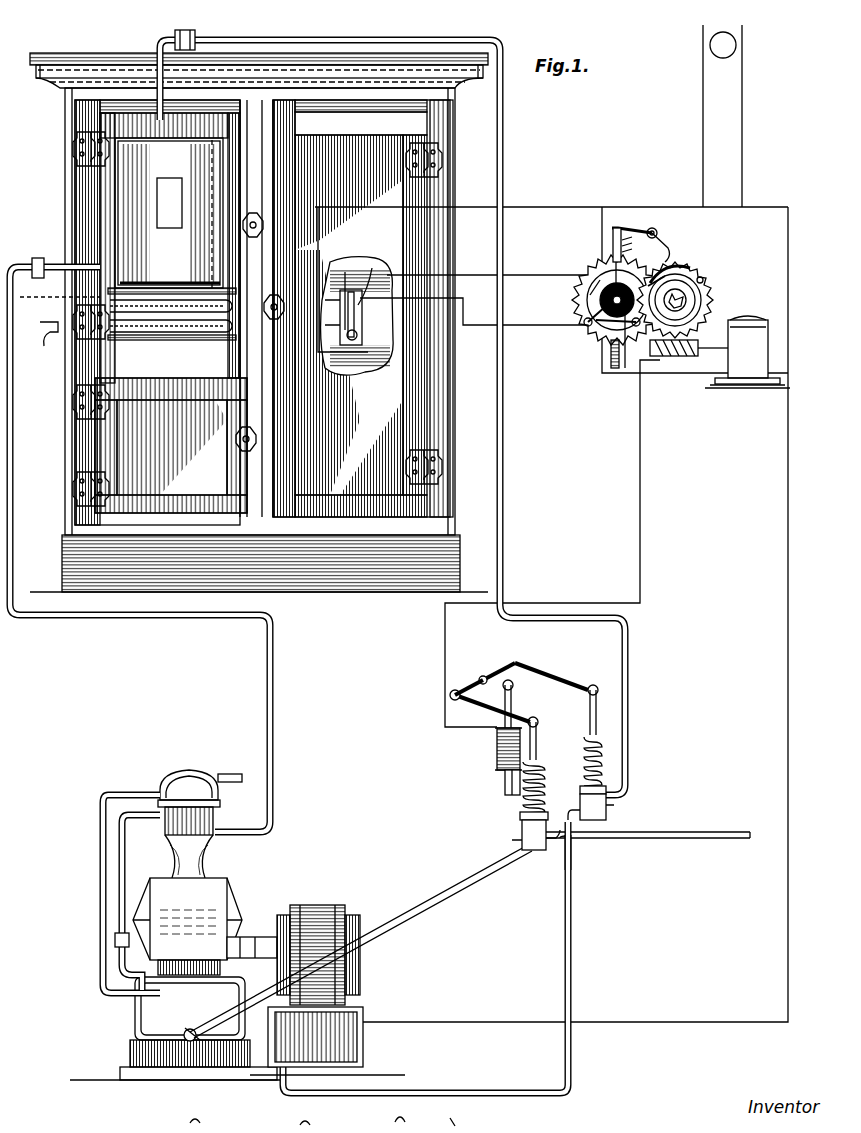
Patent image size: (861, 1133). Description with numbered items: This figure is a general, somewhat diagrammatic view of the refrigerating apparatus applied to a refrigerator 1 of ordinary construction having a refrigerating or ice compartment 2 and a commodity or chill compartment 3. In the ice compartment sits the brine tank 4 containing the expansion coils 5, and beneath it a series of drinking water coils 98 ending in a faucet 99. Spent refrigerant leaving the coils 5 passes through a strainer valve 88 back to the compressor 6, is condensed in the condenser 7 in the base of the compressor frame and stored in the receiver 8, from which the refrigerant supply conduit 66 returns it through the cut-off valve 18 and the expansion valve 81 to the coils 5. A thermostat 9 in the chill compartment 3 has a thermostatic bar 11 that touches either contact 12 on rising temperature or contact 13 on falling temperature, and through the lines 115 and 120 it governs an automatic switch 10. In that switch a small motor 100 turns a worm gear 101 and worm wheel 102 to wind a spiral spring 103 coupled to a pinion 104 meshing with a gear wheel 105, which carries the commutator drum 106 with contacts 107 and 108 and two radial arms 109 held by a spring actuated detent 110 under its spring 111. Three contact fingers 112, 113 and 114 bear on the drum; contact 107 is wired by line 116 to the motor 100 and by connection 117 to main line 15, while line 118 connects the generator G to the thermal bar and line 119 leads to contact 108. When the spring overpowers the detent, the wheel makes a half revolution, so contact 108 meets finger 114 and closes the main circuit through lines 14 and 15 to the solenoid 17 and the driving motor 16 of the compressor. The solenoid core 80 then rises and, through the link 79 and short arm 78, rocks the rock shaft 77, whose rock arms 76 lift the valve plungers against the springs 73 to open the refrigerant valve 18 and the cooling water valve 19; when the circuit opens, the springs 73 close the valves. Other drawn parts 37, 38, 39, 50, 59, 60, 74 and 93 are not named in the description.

The refrigerator 1 is at (259, 322).
The refrigerating compartment 2 is at (147, 312).
The commodity compartment 3 is at (401, 309).
The brine tank 4 is at (165, 263).
The expansion coils 5 is at (208, 238).
The compressor 6 is at (205, 905).
The condenser 7 is at (175, 1028).
The receiver 8 is at (327, 1041).
The thermostat 9 is at (356, 312).
The automatic switch 10 is at (682, 237).
The thermostatic bar 11 is at (343, 328).
The contact point 12 is at (375, 266).
The contact point 13 is at (347, 270).
The main circuit line 14 is at (640, 502).
The main circuit line 15 is at (788, 518).
The driving motor 16 is at (310, 905).
The solenoid 17 is at (492, 749).
The cut-off valve 18 is at (576, 785).
The cooling water valve 19 is at (519, 832).
The compressor head 37 is at (184, 774).
The discharge pipe 38 is at (238, 774).
The pipe 39 is at (120, 846).
The pipe 50 is at (142, 790).
The rod end 59 is at (262, 1037).
The connecting rod 60 is at (408, 915).
The refrigerant supply conduit 66 is at (349, 34).
The valve retracting spring 73 is at (540, 772).
The valve stem nut 74 is at (547, 806).
The rock arm 76 is at (568, 677).
The rock shaft 77 is at (505, 670).
The third arm 78 is at (518, 685).
The link 79 is at (524, 708).
The solenoid core 80 is at (502, 786).
The expansion valve 81 is at (190, 30).
The strainer valve 88 is at (40, 257).
The coil box 93 is at (169, 203).
The water coils 98 is at (156, 330).
The faucet 99 is at (54, 342).
The switch motor 100 is at (747, 320).
The worm gear 101 is at (685, 356).
The worm wheel 102 is at (720, 283).
The spiral spring 103 is at (693, 268).
The gear pinion 104 is at (745, 258).
The gear wheel 105 is at (592, 334).
The commutator drum 106 is at (578, 293).
The electrical contact 107 is at (580, 309).
The electrical contact 108 is at (598, 280).
The radial arm 109 is at (615, 221).
The detent 110 is at (650, 224).
The detent spring 111 is at (657, 233).
The contact finger 112 is at (582, 326).
The contact finger 113 is at (670, 275).
The contact finger 114 is at (618, 370).
The line 115 is at (480, 327).
The line 116 is at (660, 376).
The connection line 117 is at (785, 370).
The line 118 is at (573, 208).
The line 119 is at (603, 249).
The line 120 is at (467, 272).
The generator G is at (736, 45).